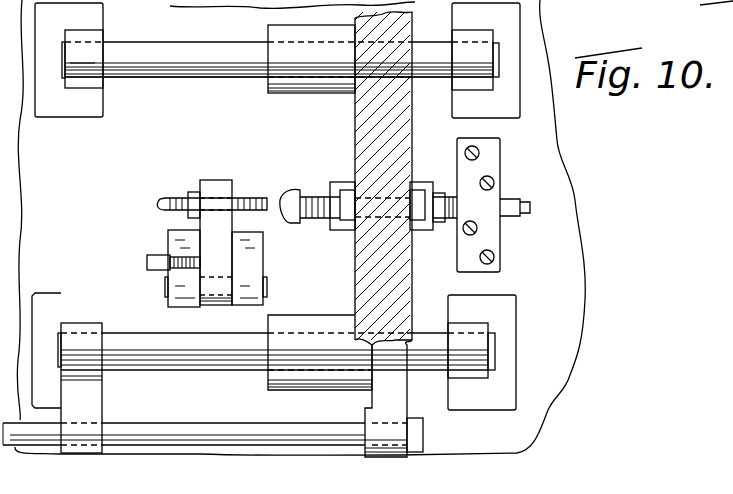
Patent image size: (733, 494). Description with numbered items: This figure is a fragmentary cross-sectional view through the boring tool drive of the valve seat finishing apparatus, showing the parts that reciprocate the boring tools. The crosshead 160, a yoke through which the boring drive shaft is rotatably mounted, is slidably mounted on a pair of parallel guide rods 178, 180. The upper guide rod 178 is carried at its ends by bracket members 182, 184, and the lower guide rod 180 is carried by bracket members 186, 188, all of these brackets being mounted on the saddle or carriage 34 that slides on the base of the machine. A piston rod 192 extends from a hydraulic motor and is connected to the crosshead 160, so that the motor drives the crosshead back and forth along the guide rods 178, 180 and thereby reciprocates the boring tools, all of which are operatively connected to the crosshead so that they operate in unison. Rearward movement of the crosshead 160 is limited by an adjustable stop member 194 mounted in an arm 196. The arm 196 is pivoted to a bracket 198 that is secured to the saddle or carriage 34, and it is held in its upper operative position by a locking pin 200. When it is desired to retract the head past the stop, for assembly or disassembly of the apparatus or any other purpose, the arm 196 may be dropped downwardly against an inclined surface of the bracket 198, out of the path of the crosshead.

The saddle or carriage 34 is at (580, 360).
The crosshead 160 is at (360, 127).
The guide rod 178 is at (157, 68).
The guide rod 180 is at (125, 342).
The bracket member 182 is at (93, 18).
The bracket member 184 is at (498, 13).
The bracket member 186 is at (80, 302).
The bracket member 188 is at (502, 308).
The piston rod 192 is at (309, 193).
The adjustable stop member 194 is at (247, 197).
The arm 196 is at (212, 225).
The bracket 198 is at (252, 260).
The locking pin 200 is at (150, 254).